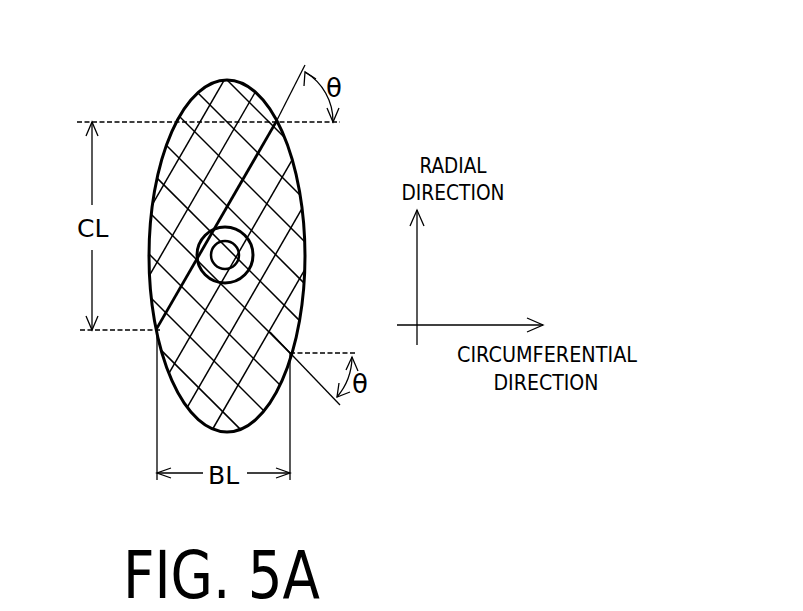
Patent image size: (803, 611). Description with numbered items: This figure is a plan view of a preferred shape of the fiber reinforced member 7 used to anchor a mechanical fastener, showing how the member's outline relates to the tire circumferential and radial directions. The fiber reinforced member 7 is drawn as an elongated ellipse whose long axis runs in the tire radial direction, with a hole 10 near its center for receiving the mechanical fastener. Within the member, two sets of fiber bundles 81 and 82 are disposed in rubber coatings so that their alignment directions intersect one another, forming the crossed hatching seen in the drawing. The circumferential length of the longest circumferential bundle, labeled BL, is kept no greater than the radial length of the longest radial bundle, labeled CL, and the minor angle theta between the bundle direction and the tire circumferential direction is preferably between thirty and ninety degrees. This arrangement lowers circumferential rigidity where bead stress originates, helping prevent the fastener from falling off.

The fiber reinforced member 7 is at (280, 212).
The hole 10 is at (231, 258).
The fiber bundles 81 is at (262, 319).
The fiber bundles 82 is at (252, 175).